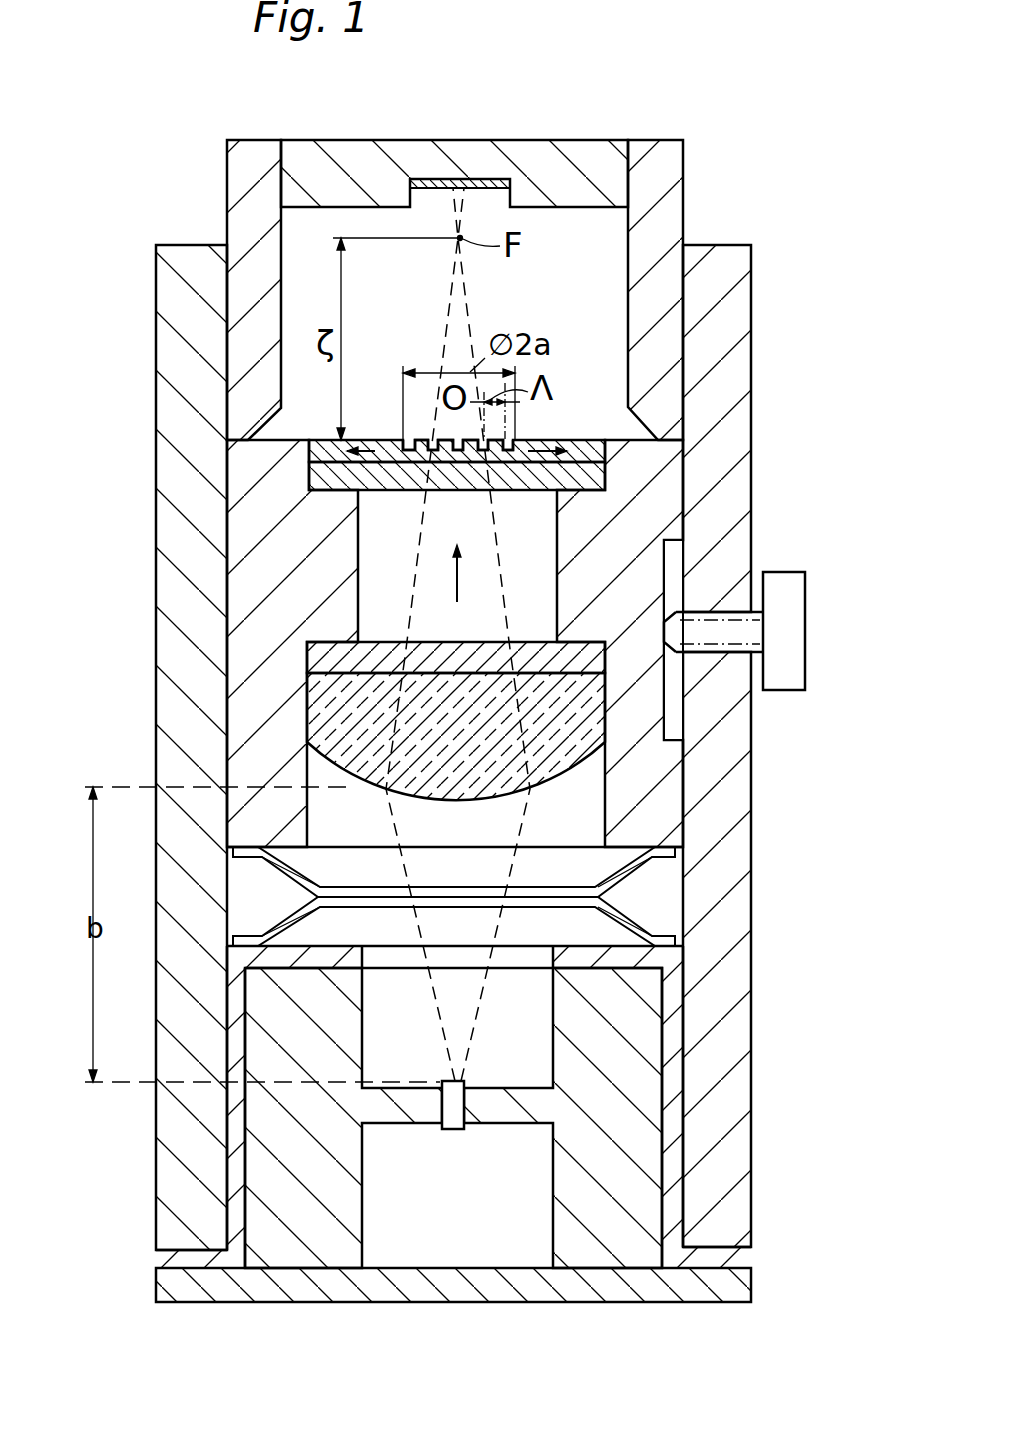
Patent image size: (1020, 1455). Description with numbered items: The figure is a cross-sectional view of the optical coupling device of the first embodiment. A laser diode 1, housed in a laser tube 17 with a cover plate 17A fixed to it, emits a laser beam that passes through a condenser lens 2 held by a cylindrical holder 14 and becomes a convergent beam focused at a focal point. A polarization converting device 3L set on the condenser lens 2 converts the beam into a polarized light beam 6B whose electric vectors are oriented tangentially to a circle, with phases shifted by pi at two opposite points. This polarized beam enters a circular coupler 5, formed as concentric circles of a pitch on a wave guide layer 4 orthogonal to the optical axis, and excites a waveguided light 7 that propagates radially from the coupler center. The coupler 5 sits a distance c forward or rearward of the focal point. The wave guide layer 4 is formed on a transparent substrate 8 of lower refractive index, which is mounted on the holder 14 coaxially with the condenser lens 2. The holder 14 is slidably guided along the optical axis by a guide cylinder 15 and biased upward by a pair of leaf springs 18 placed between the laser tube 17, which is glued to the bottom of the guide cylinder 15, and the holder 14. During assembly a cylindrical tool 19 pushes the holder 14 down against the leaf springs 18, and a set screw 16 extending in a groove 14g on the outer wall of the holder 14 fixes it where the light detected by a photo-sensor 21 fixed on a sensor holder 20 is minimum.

The laser diode 1 is at (455, 1130).
The condenser lens 2 is at (550, 780).
The polarization converting device 3L is at (307, 658).
The wave guide layer 4 is at (693, 450).
The circular coupler 5 is at (425, 440).
The polarized light beam 6B is at (450, 582).
The waveguided light 7 is at (375, 447).
The transparent substrate 8 is at (583, 478).
The cylindrical holder 14 is at (257, 492).
The groove 14g is at (672, 548).
The guide cylinder 15 is at (183, 737).
The set screw 16 is at (790, 622).
The laser tube 17 is at (237, 1143).
The cover plate 17A is at (740, 1282).
The leaf springs 18 is at (650, 870).
The cylindrical tool 19 is at (668, 176).
The sensor holder 20 is at (575, 150).
The photo-sensor 21 is at (492, 178).